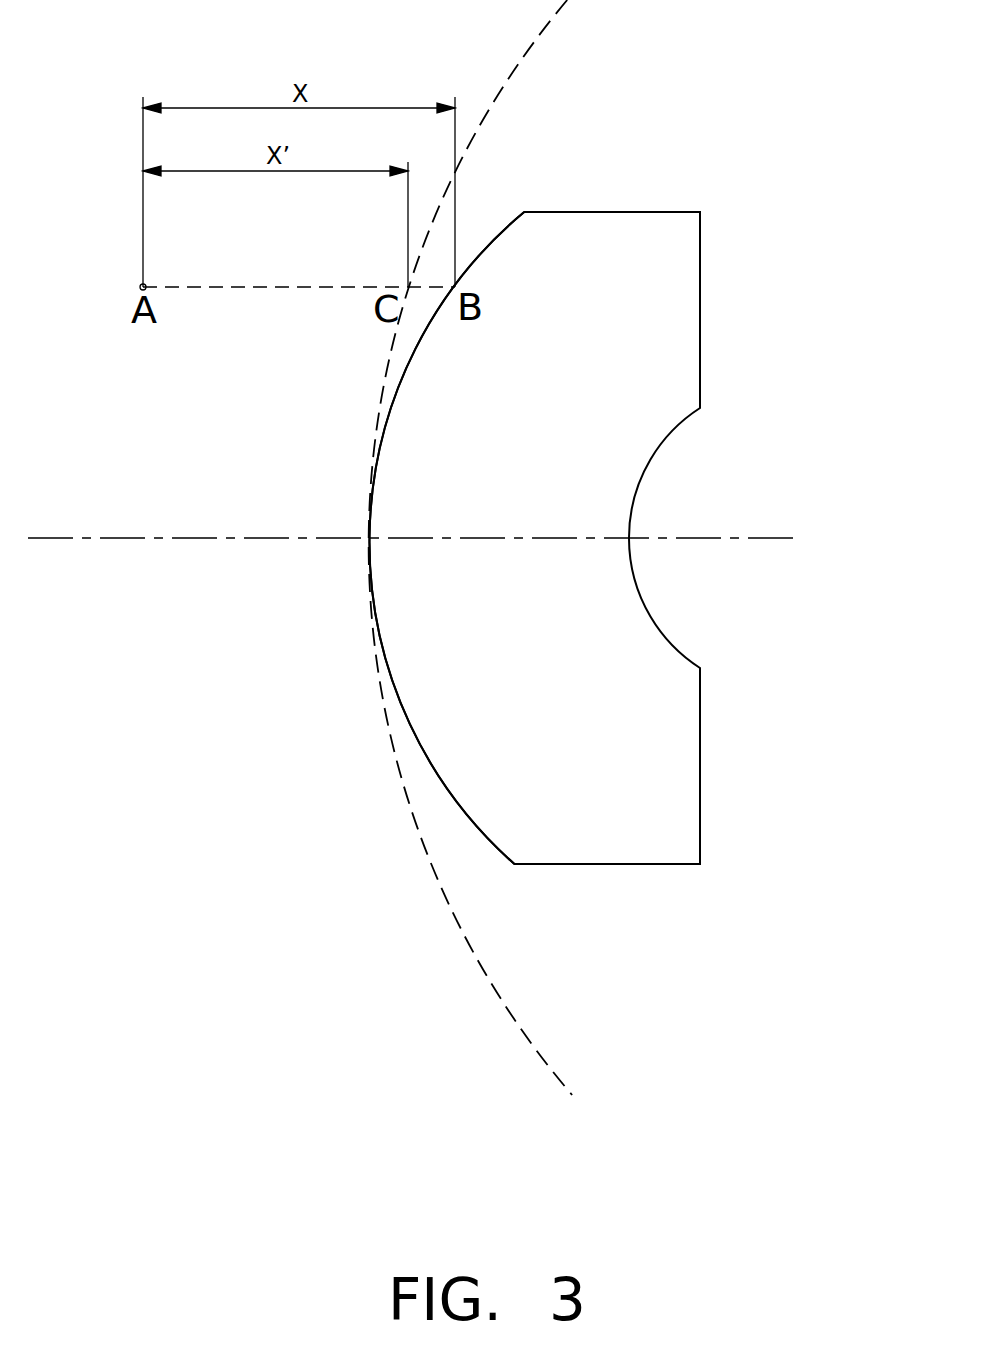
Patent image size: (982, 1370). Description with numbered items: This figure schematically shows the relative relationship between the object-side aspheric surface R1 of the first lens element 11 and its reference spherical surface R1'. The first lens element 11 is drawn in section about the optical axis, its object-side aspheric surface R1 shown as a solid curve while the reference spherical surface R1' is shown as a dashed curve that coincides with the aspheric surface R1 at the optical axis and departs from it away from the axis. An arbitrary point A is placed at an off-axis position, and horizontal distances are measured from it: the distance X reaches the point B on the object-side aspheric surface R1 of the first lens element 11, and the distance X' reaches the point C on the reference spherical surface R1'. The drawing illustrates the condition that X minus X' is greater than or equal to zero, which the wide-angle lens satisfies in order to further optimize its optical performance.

The first lens element 11 is at (633, 783).
The object-side aspheric surface R1 is at (424, 576).
The reference spherical surface R1' is at (405, 547).